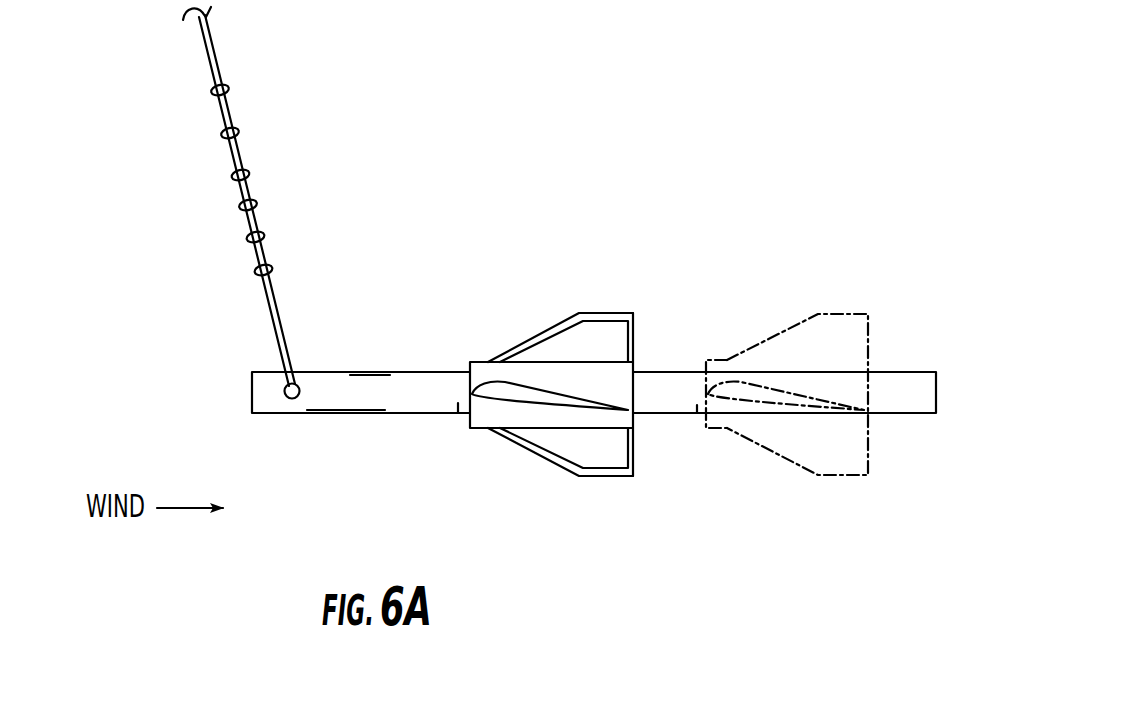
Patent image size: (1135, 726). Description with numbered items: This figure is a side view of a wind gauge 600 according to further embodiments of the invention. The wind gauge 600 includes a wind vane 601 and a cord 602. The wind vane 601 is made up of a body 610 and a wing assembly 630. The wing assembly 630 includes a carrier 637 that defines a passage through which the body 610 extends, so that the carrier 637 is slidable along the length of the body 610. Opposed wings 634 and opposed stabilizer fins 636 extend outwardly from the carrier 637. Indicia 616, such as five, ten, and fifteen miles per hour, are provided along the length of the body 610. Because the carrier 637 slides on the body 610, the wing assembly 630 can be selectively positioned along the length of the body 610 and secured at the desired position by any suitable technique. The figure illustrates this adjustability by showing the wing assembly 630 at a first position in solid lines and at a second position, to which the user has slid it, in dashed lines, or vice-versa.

The wind gauge 600 is at (632, 107).
The wind vane 601 is at (683, 197).
The cord 602 is at (215, 62).
The body 610 is at (338, 378).
The indicia 616 is at (407, 416).
The wing assembly 630 is at (562, 501).
The wings 634 is at (522, 395).
The stabilizer fins 636 is at (578, 338).
The carrier 637 is at (610, 382).